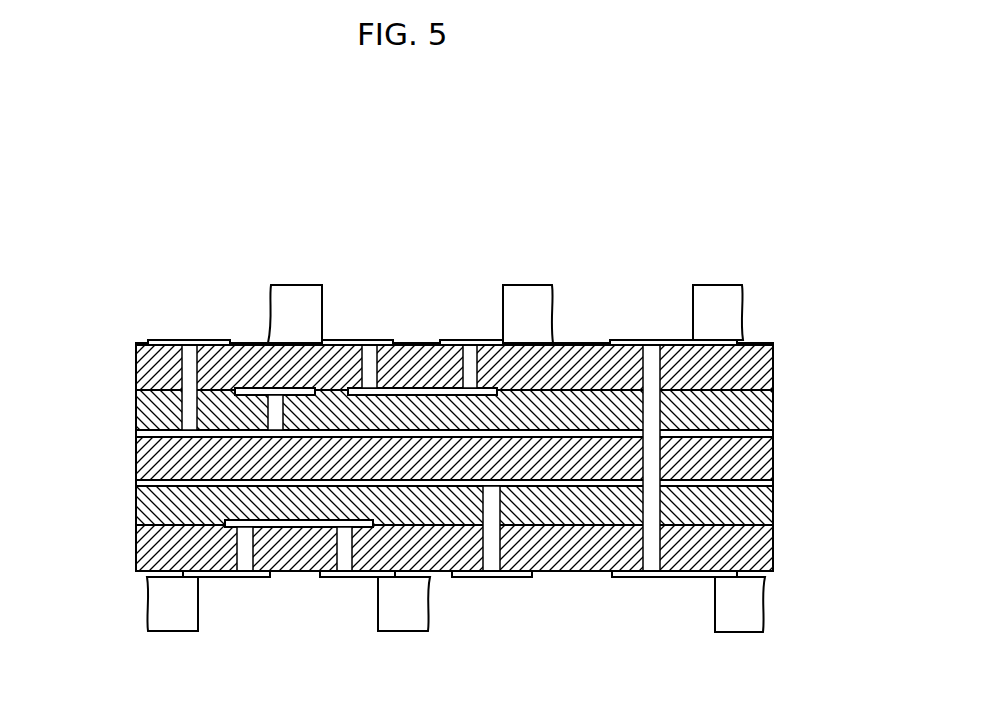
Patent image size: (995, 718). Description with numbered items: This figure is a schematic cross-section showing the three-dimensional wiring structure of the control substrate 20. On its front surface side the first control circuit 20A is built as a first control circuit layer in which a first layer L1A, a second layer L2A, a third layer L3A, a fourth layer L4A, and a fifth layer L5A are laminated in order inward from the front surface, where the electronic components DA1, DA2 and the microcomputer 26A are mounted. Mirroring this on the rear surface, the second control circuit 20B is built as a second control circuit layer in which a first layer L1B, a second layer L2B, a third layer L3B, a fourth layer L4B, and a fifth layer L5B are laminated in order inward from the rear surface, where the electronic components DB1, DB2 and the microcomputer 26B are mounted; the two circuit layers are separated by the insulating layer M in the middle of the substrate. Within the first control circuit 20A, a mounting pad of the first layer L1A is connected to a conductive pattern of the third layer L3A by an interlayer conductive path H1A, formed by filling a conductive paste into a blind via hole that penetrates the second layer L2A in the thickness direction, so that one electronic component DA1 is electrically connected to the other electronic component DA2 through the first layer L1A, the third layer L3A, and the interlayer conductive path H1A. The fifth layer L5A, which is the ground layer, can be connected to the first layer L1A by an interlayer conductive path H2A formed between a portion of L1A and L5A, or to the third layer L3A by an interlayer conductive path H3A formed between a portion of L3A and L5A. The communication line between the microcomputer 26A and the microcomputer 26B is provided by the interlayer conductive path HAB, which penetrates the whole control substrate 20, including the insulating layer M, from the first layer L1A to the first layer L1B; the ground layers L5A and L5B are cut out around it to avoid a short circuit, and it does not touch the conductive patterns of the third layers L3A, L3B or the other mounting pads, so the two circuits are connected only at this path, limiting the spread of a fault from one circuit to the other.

The control substrate 20 is at (499, 153).
The first control circuit 20A is at (58, 440).
The second control circuit 20B is at (28, 478).
The second layer L2A is at (136, 366).
The fourth layer L4A is at (136, 402).
The fifth layer L5A is at (136, 433).
The insulating layer M is at (136, 458).
The fifth layer L5B is at (136, 484).
The fourth layer L4B is at (136, 512).
The second layer L2B is at (136, 545).
The first layer L1A is at (170, 340).
The third layer L3A is at (244, 387).
The first layer L1B is at (244, 577).
The third layer L3B is at (310, 528).
The interlayer conductive path H1A is at (357, 345).
The interlayer conductive path H2A is at (182, 370).
The interlayer conductive path H3A is at (268, 412).
The interlayer conductive path HAB is at (643, 370).
The electronic component DA1 is at (280, 285).
The electronic component DA2 is at (537, 285).
The microcomputer 26A is at (706, 285).
The electronic component DB1 is at (178, 631).
The electronic component DB2 is at (414, 631).
The microcomputer 26B is at (724, 632).